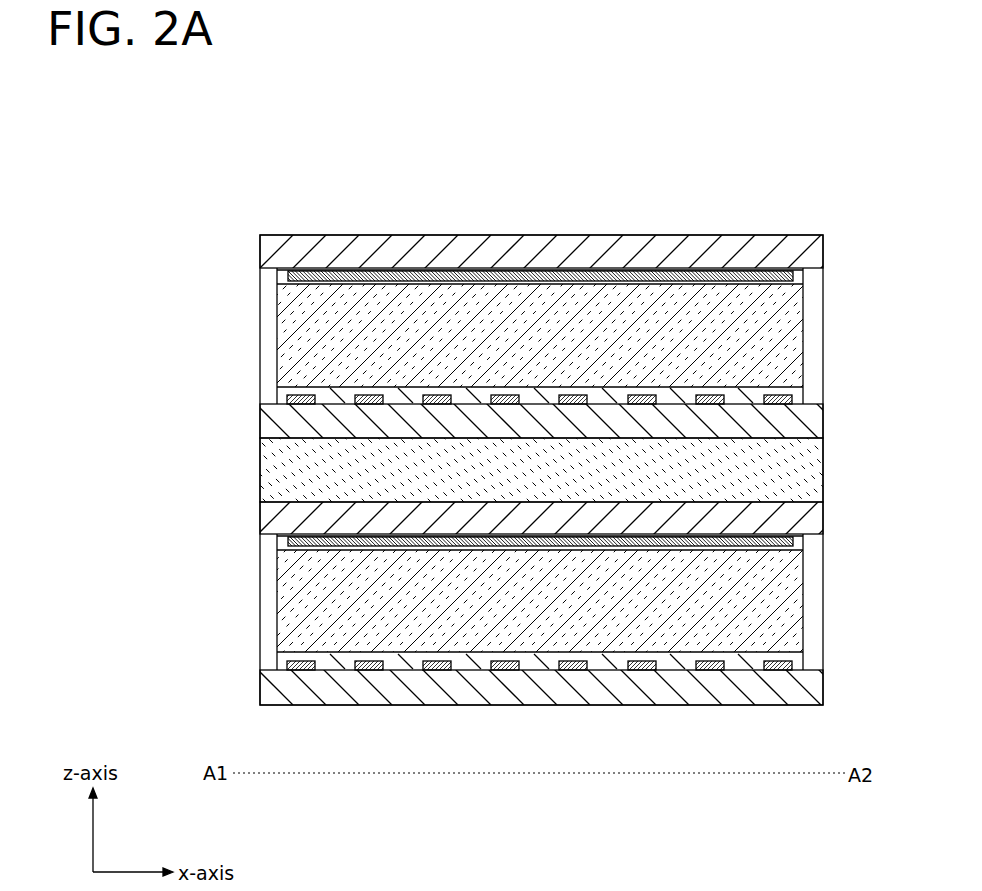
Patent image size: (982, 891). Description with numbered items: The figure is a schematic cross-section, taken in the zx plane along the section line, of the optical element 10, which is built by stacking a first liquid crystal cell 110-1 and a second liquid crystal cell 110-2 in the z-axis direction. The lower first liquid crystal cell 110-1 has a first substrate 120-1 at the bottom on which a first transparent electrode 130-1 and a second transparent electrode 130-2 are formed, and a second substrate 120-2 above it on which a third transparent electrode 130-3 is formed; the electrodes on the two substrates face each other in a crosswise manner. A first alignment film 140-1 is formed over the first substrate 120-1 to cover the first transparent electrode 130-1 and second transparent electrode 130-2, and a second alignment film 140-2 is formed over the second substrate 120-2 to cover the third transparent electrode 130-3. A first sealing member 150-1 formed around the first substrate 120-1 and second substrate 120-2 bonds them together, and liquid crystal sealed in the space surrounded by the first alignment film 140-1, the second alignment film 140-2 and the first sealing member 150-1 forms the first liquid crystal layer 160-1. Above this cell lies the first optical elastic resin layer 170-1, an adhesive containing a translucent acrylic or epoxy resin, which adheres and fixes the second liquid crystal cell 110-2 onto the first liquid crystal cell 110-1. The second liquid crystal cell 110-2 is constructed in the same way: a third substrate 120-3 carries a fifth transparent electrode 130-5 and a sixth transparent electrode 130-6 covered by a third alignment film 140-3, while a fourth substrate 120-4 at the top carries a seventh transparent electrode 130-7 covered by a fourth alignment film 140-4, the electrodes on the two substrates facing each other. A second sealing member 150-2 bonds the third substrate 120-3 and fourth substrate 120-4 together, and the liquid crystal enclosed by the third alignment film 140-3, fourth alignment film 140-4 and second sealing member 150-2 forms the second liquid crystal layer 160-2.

The optical element 10 is at (157, 131).
The first liquid crystal cell 110-1 is at (144, 500).
The second liquid crystal cell 110-2 is at (144, 235).
The first substrate 120-1 is at (262, 688).
The second substrate 120-2 is at (262, 518).
The third substrate 120-3 is at (262, 420).
The fourth substrate 120-4 is at (262, 250).
The first transparent electrode 130-1 is at (369, 660).
The second transparent electrode 130-2 is at (437, 660).
The third transparent electrode 130-3 is at (540, 549).
The fifth transparent electrode 130-5 is at (369, 394).
The sixth transparent electrode 130-6 is at (437, 394).
The seventh transparent electrode 130-7 is at (541, 283).
The first alignment film 140-1 is at (612, 659).
The second alignment film 140-2 is at (655, 556).
The third alignment film 140-3 is at (612, 393).
The fourth alignment film 140-4 is at (655, 290).
The first sealing member 150-1 is at (276, 600).
The second sealing member 150-2 is at (276, 333).
The first liquid crystal layer 160-1 is at (278, 634).
The second liquid crystal layer 160-2 is at (278, 368).
The first optical elastic resin layer 170-1 is at (262, 468).